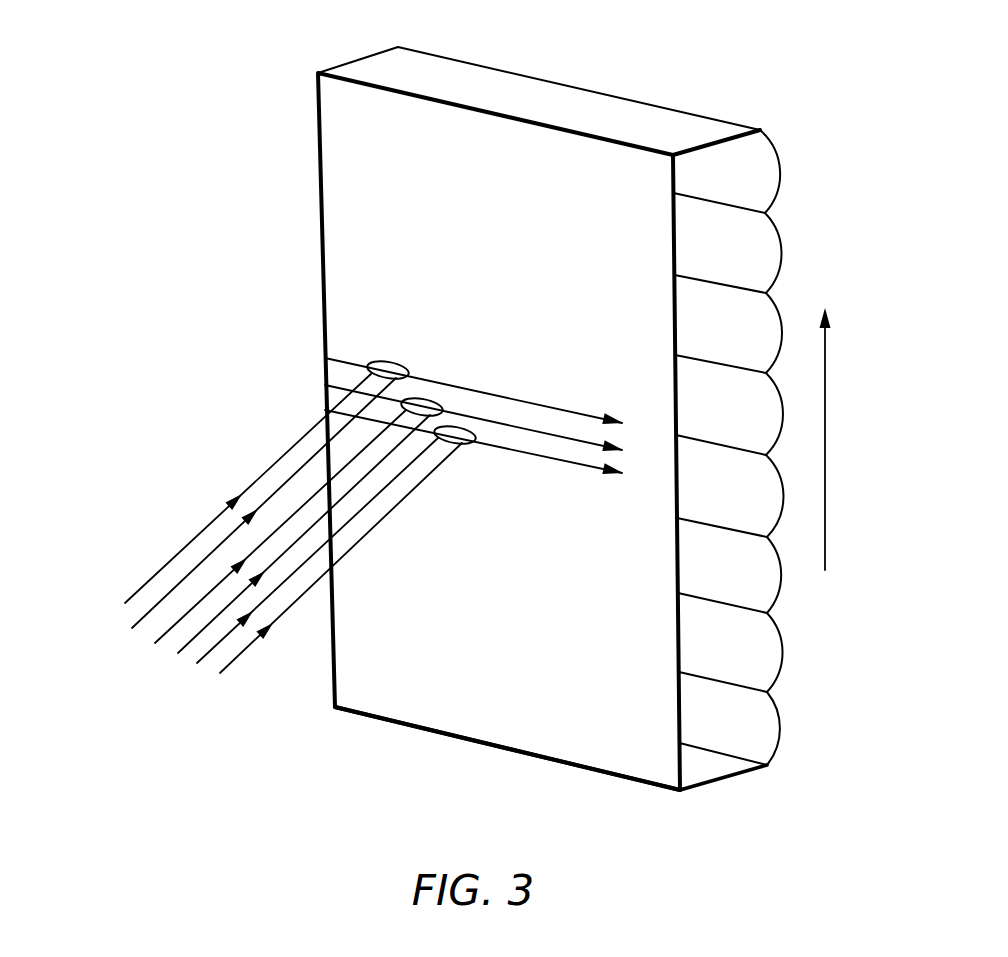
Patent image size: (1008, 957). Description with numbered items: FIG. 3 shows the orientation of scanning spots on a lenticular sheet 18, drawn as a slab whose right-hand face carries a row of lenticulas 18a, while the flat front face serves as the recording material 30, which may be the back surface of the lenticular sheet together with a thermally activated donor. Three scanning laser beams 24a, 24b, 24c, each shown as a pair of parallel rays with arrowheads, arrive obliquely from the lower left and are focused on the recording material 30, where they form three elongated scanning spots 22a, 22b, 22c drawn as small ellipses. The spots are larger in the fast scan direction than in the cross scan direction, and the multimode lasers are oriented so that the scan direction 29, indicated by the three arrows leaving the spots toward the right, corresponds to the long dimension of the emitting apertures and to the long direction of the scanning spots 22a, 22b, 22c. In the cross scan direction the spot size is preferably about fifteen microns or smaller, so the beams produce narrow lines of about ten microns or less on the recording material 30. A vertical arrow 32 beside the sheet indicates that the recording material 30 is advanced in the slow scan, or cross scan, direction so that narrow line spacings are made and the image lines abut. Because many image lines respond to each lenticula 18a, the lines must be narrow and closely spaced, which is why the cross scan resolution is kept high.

The lenticular sheet 18 is at (560, 147).
The lenticulas 18a is at (770, 165).
The scanning spot 22a is at (394, 362).
The scanning spot 22b is at (432, 398).
The scanning spot 22c is at (462, 445).
The scanning laser beam 24a is at (187, 557).
The scanning laser beam 24b is at (180, 632).
The scanning laser beam 24c is at (228, 653).
The scan direction 29 is at (560, 410).
The recording material 30 is at (535, 742).
The vertical arrow 32 is at (830, 417).